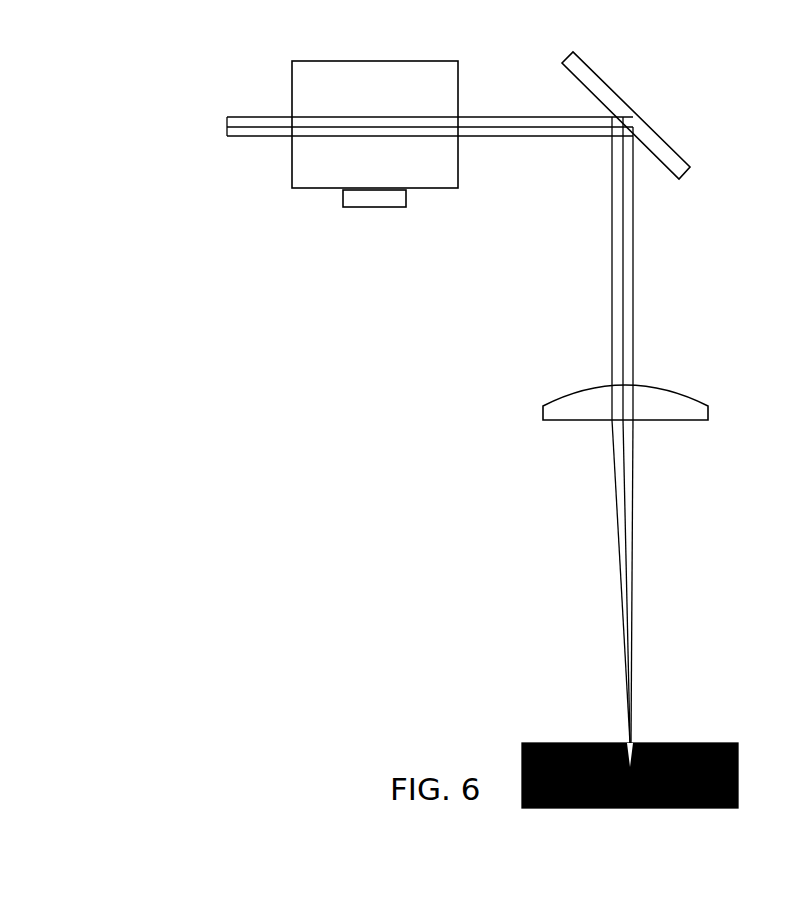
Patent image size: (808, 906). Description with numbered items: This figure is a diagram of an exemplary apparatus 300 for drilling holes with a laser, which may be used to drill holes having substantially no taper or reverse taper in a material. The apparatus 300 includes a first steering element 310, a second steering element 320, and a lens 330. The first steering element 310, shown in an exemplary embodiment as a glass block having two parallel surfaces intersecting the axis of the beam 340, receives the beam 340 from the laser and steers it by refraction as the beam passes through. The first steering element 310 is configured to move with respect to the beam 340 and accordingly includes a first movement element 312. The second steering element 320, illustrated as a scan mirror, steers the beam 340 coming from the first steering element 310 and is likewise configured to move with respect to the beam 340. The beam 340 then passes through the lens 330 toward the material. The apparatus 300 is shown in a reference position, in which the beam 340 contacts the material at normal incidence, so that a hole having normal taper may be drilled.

The apparatus 300 is at (108, 113).
The first steering element 310 is at (294, 83).
The first movement element 312 is at (353, 208).
The second steering element 320 is at (655, 130).
The lens 330 is at (563, 398).
The beam 340 is at (612, 293).